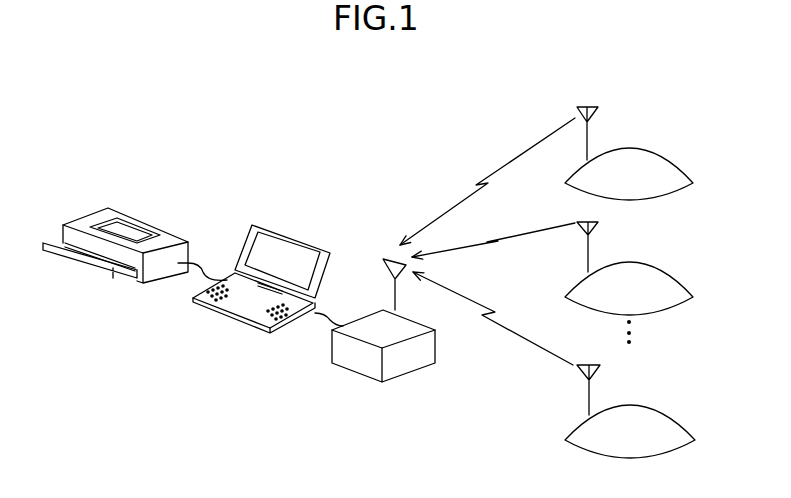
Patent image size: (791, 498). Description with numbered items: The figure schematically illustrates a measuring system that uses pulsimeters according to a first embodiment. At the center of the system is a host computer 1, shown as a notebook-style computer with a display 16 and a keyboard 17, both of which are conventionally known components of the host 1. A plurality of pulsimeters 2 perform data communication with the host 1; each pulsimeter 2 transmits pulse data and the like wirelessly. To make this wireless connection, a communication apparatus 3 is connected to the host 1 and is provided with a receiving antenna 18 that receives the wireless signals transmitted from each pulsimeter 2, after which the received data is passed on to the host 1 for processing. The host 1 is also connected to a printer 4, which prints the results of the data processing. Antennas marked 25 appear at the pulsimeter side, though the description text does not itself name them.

The host computer 1 is at (263, 266).
The pulsimeter 2 is at (658, 151).
The communication apparatus 3 is at (402, 376).
The printer 4 is at (95, 208).
The display 16 is at (280, 245).
The keyboard 17 is at (243, 302).
The receiving antenna 18 is at (381, 264).
The access point antenna 25 is at (599, 112).